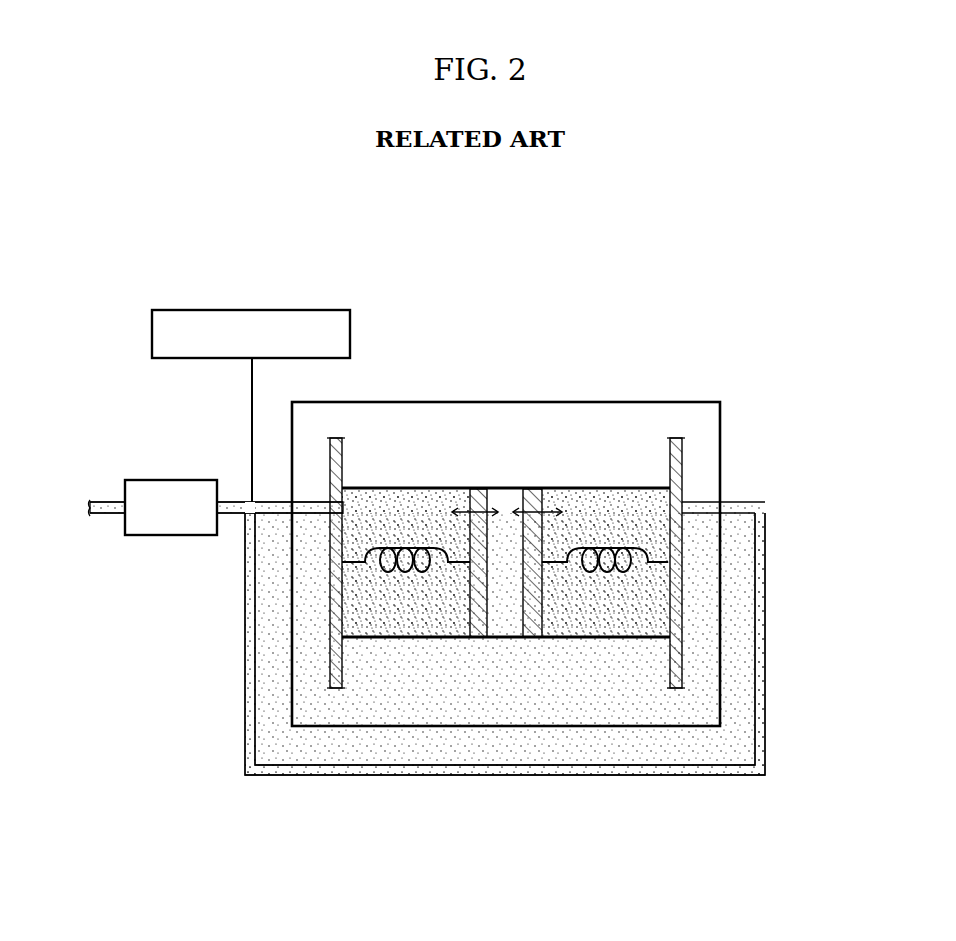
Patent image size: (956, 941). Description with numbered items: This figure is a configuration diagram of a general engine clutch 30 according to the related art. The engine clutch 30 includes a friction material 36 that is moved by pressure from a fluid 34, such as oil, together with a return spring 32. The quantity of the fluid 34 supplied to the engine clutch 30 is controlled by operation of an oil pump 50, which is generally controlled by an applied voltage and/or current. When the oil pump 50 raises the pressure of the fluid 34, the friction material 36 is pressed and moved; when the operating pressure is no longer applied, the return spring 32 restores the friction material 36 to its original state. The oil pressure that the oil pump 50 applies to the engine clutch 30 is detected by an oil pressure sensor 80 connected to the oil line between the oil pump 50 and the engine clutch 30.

The engine clutch 30 is at (626, 402).
The return spring 32 is at (617, 547).
The fluid 34 is at (412, 613).
The friction material 36 is at (483, 640).
The oil pump 50 is at (170, 478).
The oil pressure sensor 80 is at (251, 310).